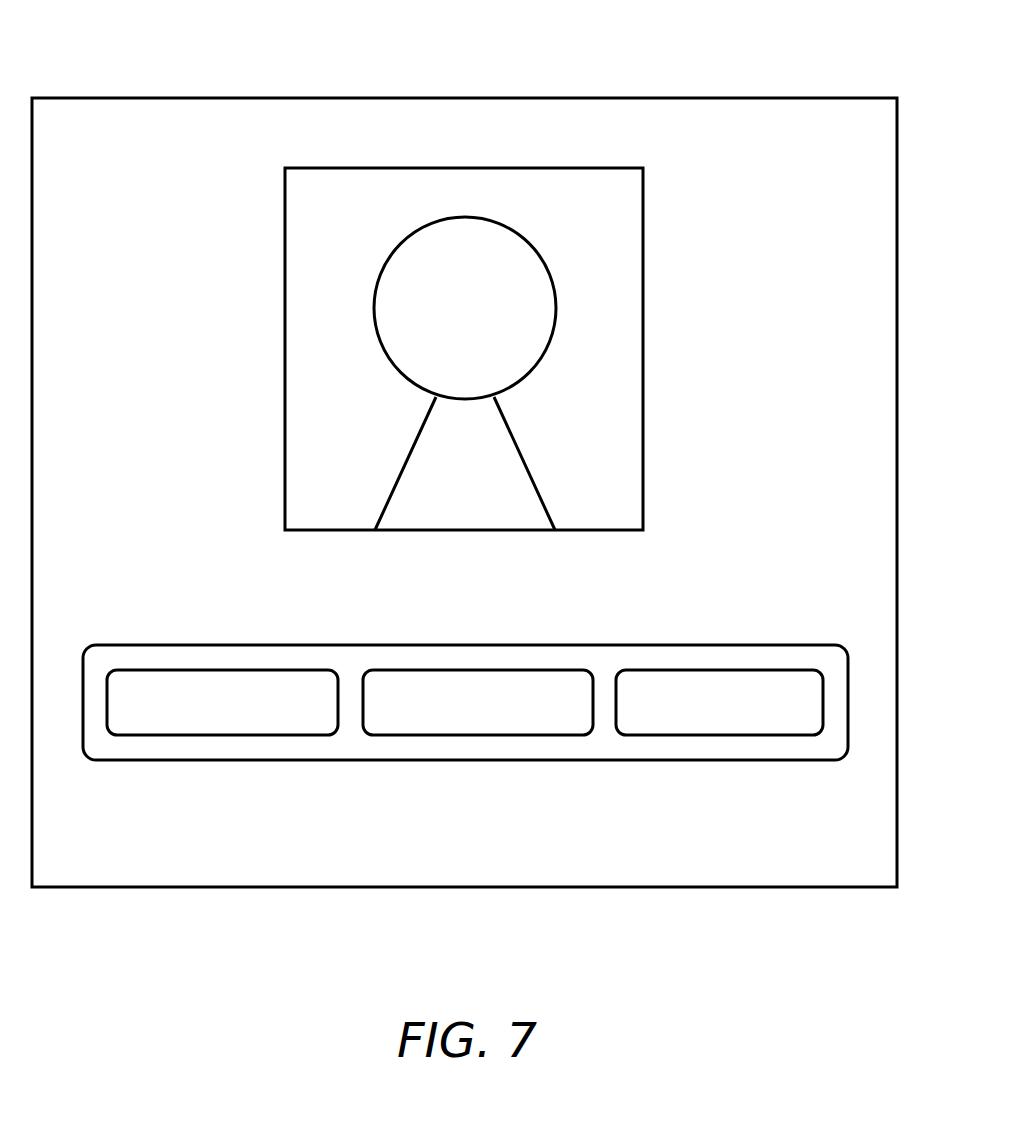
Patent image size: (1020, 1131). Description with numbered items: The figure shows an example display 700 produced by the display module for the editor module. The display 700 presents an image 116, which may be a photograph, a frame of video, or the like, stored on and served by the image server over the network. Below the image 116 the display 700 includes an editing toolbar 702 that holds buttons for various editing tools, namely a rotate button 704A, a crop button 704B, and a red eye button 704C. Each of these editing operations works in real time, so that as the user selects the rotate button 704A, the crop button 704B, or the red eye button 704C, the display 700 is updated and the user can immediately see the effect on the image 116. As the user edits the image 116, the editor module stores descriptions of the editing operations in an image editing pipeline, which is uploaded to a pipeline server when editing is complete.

The display 700 is at (464, 98).
The image 116 is at (643, 353).
The editing toolbar 702 is at (465, 645).
The rotate button 704A is at (273, 735).
The crop button 704B is at (525, 735).
The red eye button 704C is at (772, 735).